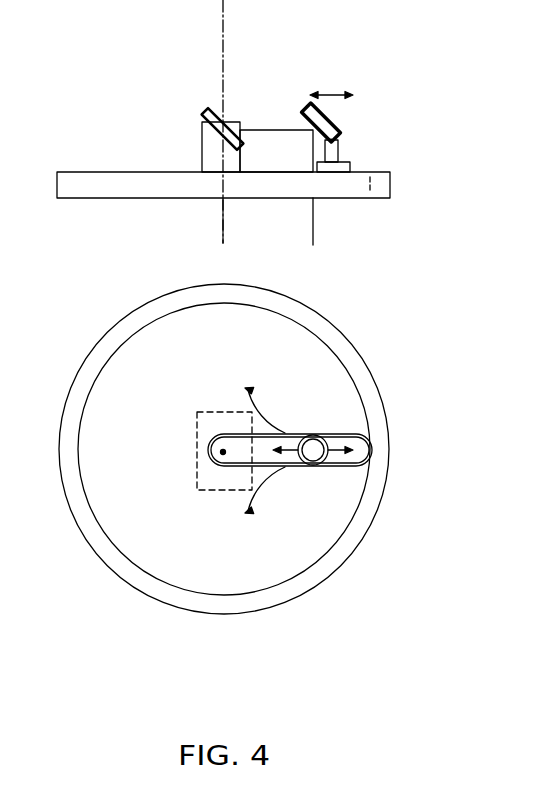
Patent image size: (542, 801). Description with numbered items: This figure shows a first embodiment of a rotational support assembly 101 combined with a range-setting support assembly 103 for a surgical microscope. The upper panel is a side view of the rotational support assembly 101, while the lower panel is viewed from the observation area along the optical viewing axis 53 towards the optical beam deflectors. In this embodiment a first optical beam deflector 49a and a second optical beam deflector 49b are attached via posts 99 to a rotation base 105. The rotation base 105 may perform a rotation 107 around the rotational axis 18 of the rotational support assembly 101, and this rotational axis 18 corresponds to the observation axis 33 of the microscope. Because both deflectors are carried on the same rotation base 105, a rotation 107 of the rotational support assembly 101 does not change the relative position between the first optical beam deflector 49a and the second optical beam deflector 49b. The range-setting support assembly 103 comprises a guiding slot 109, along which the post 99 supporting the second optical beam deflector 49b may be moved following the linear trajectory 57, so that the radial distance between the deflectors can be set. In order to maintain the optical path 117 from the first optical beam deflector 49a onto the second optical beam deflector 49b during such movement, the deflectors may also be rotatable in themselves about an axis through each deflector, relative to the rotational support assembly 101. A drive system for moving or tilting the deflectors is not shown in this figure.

The rotational support assembly 101 is at (170, 82).
The first optical beam deflector 49a is at (203, 122).
The second optical beam deflector 49b is at (300, 127).
The linear trajectory 57 is at (342, 93).
The post 99 is at (202, 145).
The range-setting support assembly 103 is at (350, 137).
The optical path 117 is at (268, 133).
The rotation base 105 is at (390, 185).
The rotational axis 18 is at (226, 208).
The observation axis 33 is at (226, 243).
The optical viewing axis 53 is at (313, 240).
The guiding slot 109 is at (362, 448).
The rotation 107 is at (283, 485).